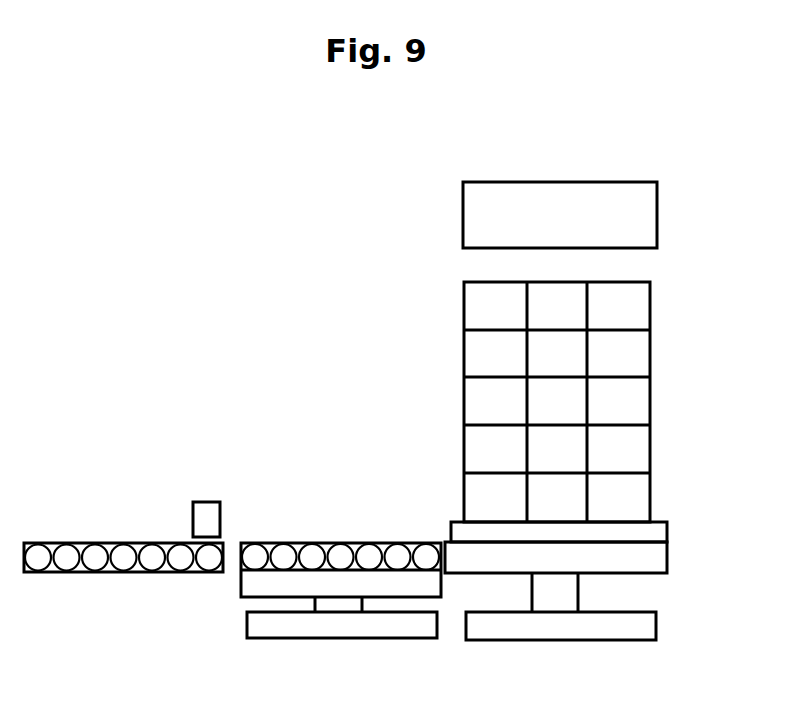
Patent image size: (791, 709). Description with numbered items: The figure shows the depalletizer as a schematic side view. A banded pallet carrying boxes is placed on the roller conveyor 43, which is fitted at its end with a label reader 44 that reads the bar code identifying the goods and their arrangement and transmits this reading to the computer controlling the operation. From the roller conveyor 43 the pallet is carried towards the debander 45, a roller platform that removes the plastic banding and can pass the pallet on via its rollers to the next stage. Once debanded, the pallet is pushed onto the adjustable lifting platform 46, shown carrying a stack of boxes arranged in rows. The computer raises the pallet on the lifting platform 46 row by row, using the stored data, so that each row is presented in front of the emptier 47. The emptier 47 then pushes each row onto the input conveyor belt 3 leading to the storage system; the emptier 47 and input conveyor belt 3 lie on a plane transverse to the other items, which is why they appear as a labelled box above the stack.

The input conveyor belt 3 is at (560, 215).
The roller conveyor 43 is at (123, 581).
The label reader 44 is at (200, 498).
The debander 45 is at (341, 613).
The adjustable lifting platform 46 is at (581, 461).
The emptier 47 is at (560, 215).